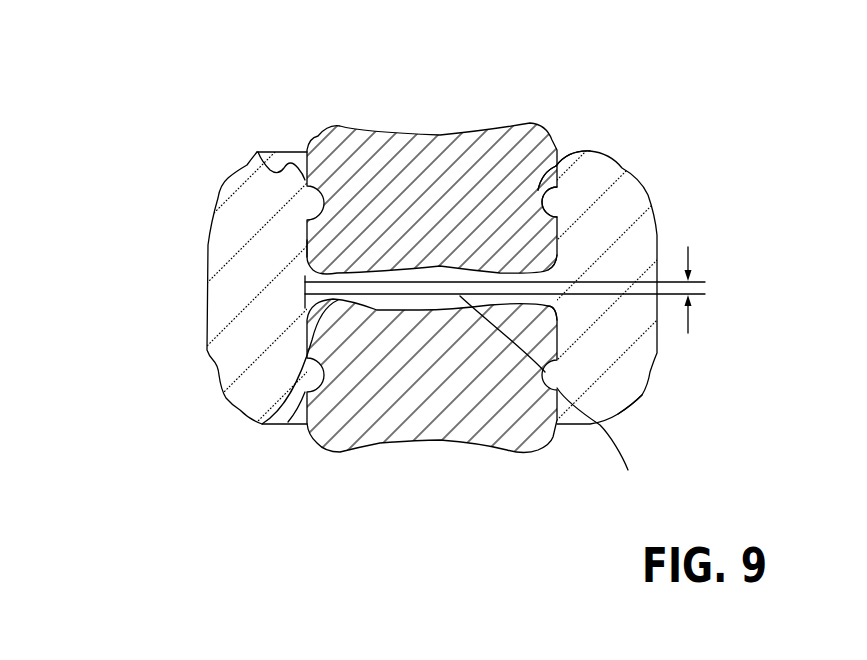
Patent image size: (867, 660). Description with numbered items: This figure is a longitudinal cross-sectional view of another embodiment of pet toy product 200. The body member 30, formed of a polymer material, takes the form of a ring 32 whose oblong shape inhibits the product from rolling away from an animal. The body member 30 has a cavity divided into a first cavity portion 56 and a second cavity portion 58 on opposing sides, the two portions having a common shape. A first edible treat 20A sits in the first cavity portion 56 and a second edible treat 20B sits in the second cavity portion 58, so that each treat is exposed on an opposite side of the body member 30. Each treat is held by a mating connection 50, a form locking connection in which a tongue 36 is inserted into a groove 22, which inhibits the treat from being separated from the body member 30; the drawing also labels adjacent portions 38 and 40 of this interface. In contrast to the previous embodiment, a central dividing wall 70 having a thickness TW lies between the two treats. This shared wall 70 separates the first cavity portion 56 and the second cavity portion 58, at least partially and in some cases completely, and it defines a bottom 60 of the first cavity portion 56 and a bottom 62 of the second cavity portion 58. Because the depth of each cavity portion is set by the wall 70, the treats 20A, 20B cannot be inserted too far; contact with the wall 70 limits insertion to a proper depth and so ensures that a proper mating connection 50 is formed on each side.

The pet toy product 200 is at (182, 130).
The body member 30 is at (180, 282).
The ring 32 is at (622, 366).
The first edible treat 20A is at (433, 112).
The second edible treat 20B is at (432, 473).
The bottom of first cavity portion 60 is at (460, 282).
The thickness of central dividing wall TW is at (724, 290).
The housing upper left edge 38 is at (258, 152).
The inner housing surface 40 is at (307, 252).
The mating connection 50 is at (565, 138).
The groove 22 is at (533, 165).
The tongue 36 is at (548, 198).
The first cavity portion 56 is at (560, 282).
The second cavity portion 58 is at (622, 408).
The bottom of second cavity portion 62 is at (560, 308).
The central dividing wall 70 is at (262, 424).